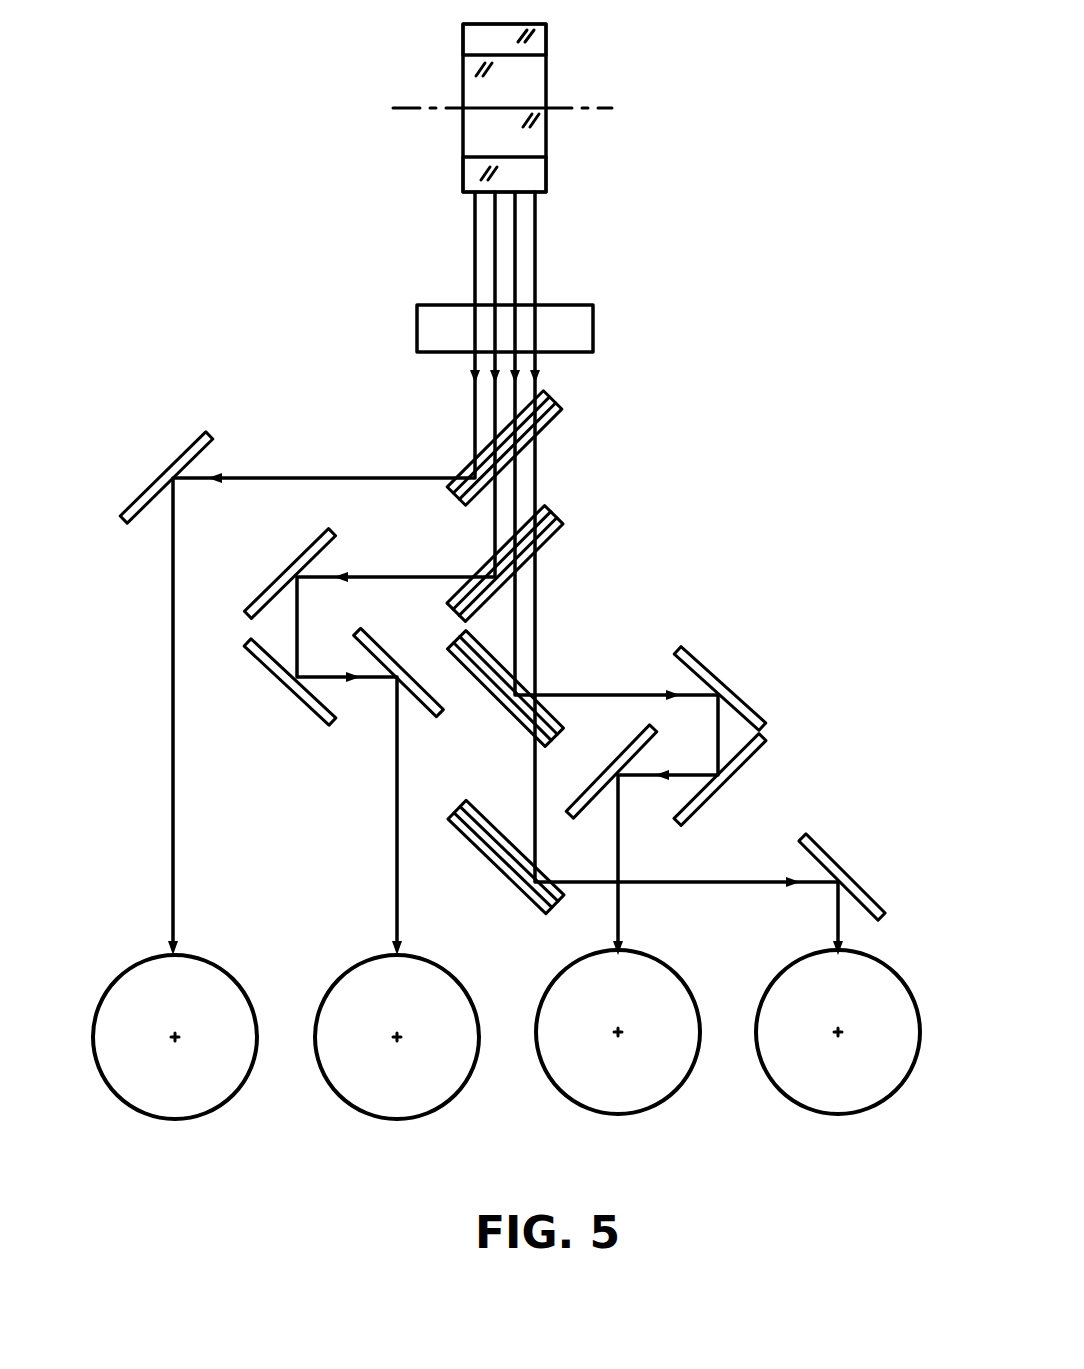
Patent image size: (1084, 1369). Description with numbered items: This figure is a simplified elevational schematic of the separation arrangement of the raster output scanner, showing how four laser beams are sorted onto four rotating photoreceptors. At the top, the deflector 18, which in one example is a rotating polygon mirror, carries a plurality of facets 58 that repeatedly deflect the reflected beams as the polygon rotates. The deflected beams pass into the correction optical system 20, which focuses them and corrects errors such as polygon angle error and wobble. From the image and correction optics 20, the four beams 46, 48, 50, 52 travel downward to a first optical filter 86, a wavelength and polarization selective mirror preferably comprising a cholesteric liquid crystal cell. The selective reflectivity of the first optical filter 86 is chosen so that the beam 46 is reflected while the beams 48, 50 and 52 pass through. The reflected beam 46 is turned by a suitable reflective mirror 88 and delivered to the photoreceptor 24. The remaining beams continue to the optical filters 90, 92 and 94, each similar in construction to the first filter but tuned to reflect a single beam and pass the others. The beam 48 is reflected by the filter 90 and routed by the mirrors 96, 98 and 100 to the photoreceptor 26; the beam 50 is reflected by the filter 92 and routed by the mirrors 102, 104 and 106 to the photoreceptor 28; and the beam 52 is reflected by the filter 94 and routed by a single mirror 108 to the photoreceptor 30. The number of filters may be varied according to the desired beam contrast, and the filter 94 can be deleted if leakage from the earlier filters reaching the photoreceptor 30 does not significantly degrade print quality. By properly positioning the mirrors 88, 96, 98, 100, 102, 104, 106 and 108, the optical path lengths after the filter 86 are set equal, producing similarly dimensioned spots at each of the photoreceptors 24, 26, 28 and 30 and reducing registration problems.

The deflector 18 is at (430, 60).
The facets 58 is at (548, 33).
The correction optical system 20 is at (612, 322).
The beam 46 is at (474, 240).
The beam 48 is at (490, 212).
The beam 50 is at (514, 212).
The beam 52 is at (536, 240).
The first optical filter 86 is at (552, 392).
The optical filter 90 is at (552, 508).
The optical filter 92 is at (507, 707).
The optical filter 94 is at (492, 858).
The reflective mirror 88 is at (143, 487).
The mirror 96 is at (274, 583).
The mirror 98 is at (265, 668).
The mirror 100 is at (374, 636).
The mirror 102 is at (737, 697).
The mirror 104 is at (745, 760).
The mirror 106 is at (638, 737).
The mirror 108 is at (870, 890).
The photoreceptor 24 is at (219, 1108).
The photoreceptor 26 is at (441, 1104).
The photoreceptor 28 is at (663, 1101).
The photoreceptor 30 is at (884, 1095).